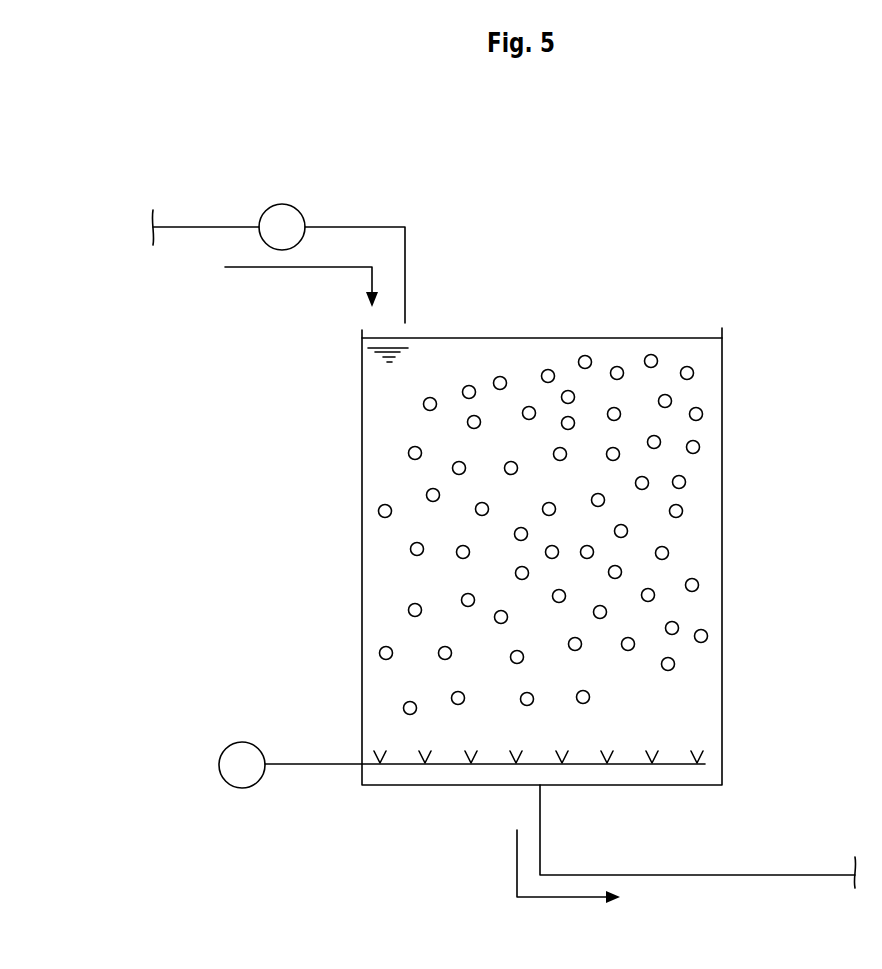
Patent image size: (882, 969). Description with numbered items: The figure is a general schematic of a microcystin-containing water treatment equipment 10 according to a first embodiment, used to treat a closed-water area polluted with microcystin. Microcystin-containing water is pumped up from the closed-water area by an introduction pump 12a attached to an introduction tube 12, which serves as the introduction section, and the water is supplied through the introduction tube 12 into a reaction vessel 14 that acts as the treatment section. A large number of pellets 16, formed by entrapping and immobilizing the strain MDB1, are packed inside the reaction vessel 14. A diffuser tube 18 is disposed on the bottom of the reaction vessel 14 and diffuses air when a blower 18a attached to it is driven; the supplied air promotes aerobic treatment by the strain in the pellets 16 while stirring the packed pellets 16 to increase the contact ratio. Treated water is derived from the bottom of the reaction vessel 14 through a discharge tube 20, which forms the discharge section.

The microcystin-containing water treatment equipment 10 is at (793, 164).
The introduction tube 12 is at (385, 225).
The introduction pump 12a is at (283, 204).
The reaction vessel 14 is at (722, 402).
The pellets 16 is at (410, 549).
The diffuser tube 18 is at (300, 768).
The blower 18a is at (242, 742).
The discharge tube 20 is at (765, 875).